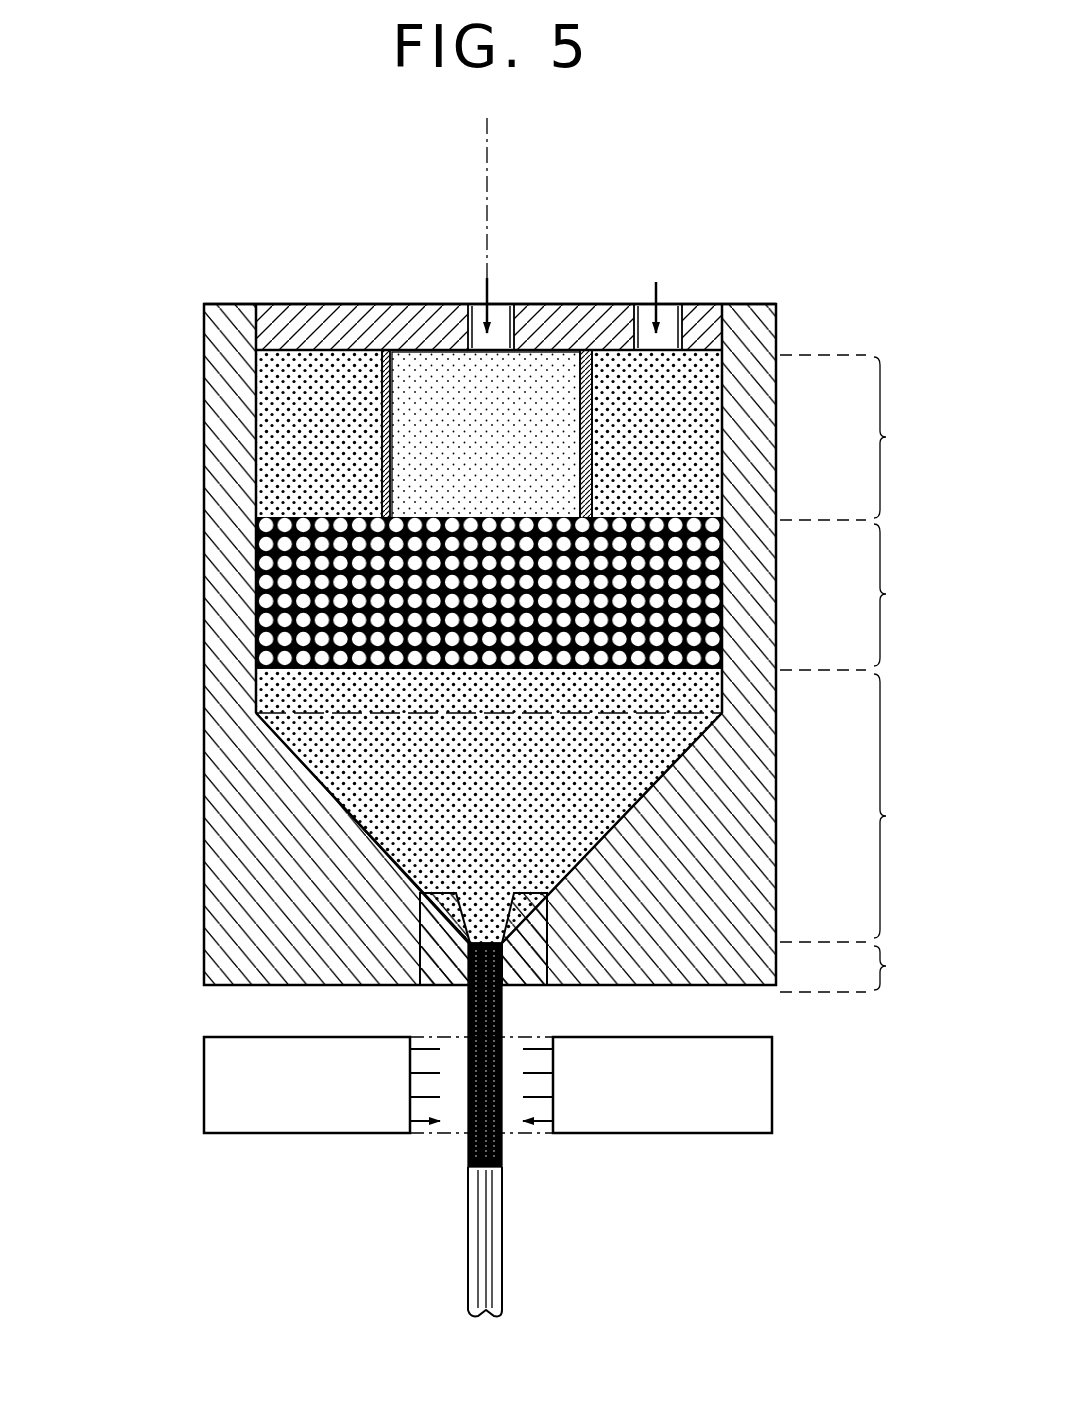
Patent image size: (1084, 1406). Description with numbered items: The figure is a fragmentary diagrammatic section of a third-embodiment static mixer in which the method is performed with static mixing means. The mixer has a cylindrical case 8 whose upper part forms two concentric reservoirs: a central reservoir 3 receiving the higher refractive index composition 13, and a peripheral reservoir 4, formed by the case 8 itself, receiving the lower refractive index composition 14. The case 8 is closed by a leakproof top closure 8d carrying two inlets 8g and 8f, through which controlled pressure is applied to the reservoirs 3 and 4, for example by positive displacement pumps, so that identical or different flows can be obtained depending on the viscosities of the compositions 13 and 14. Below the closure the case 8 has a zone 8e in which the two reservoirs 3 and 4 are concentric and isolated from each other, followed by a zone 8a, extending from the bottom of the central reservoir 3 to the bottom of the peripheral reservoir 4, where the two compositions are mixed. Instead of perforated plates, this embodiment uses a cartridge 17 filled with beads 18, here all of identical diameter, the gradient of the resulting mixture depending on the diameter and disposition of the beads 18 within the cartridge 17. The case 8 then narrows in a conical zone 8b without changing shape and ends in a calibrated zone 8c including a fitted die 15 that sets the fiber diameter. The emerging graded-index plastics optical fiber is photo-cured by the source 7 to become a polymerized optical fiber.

The central reservoir 3 is at (378, 386).
The peripheral reservoir 4 is at (216, 380).
The source 7 is at (745, 1095).
The cylindrical case 8 is at (198, 468).
The mixing zone 8a is at (861, 597).
The conical zone 8b is at (862, 808).
The calibrated zone 8c is at (861, 969).
The leakproof top closure 8d is at (600, 330).
The isolation zone 8e is at (862, 437).
The inlet 8f is at (657, 300).
The inlet 8g is at (498, 330).
The higher refractive index composition 13 is at (428, 382).
The lower refractive index composition 14 is at (265, 408).
The die 15 is at (454, 986).
The cartridge 17 is at (316, 676).
The beads 18 is at (325, 640).